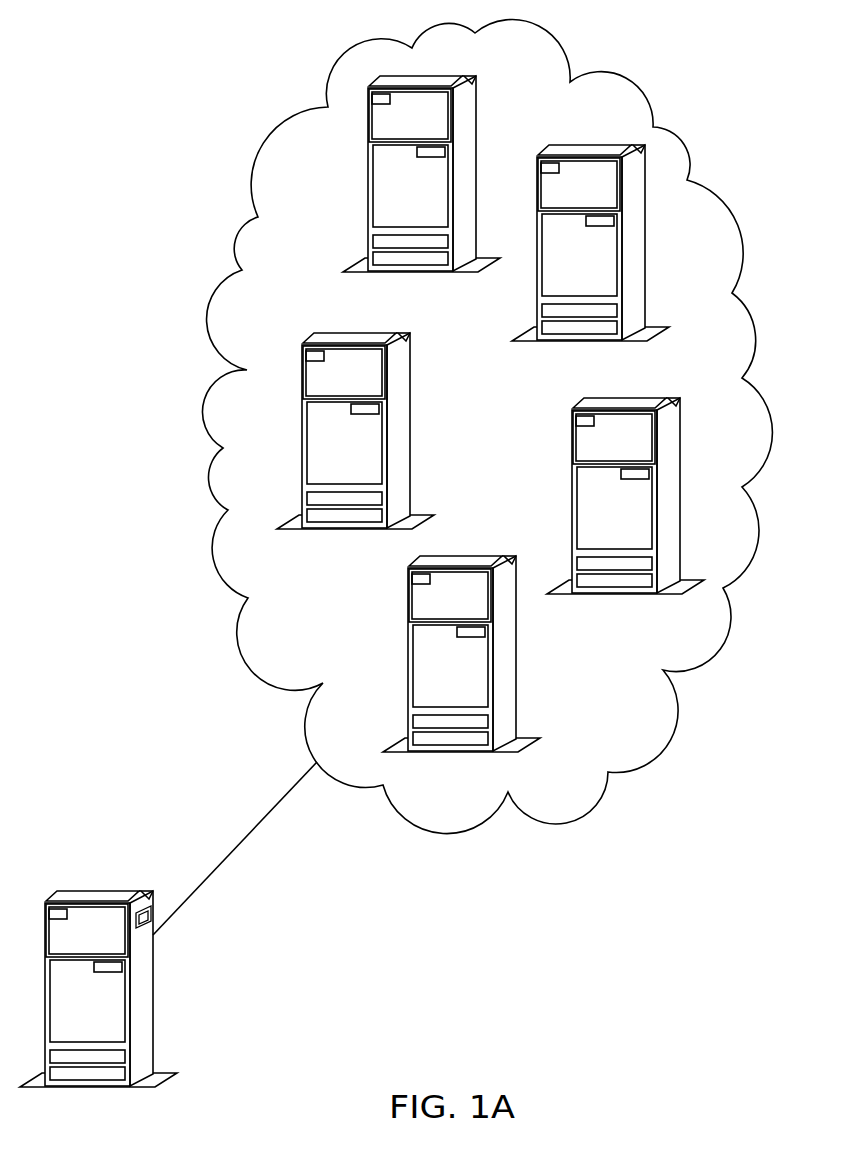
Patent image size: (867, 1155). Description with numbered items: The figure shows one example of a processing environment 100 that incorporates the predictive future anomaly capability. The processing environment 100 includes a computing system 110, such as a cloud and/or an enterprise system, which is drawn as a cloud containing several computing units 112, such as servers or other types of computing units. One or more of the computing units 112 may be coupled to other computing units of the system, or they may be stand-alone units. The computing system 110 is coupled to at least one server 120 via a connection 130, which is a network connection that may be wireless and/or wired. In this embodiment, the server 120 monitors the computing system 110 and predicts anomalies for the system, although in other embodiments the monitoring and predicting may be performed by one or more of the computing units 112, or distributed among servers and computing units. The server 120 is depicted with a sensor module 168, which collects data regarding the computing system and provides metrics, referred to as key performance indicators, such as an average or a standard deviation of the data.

The processing environment 100 is at (121, 48).
The computing system 110 is at (630, 73).
The computing unit 112 is at (585, 146).
The server 120 is at (147, 1008).
The connection 130 is at (242, 842).
The sensor module 168 is at (152, 912).